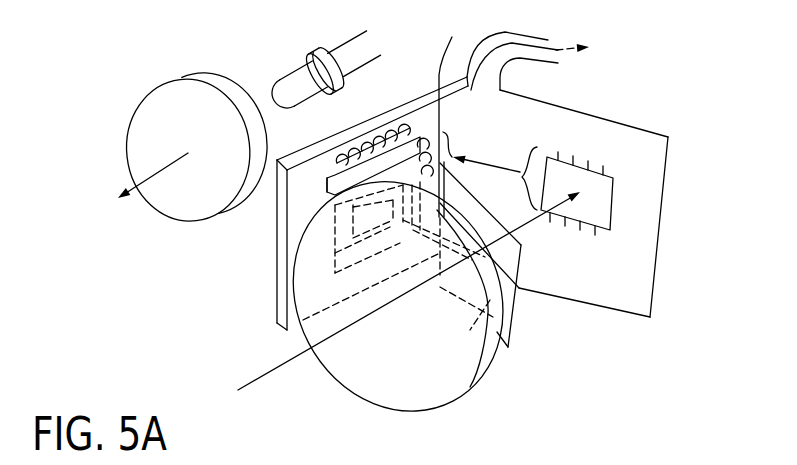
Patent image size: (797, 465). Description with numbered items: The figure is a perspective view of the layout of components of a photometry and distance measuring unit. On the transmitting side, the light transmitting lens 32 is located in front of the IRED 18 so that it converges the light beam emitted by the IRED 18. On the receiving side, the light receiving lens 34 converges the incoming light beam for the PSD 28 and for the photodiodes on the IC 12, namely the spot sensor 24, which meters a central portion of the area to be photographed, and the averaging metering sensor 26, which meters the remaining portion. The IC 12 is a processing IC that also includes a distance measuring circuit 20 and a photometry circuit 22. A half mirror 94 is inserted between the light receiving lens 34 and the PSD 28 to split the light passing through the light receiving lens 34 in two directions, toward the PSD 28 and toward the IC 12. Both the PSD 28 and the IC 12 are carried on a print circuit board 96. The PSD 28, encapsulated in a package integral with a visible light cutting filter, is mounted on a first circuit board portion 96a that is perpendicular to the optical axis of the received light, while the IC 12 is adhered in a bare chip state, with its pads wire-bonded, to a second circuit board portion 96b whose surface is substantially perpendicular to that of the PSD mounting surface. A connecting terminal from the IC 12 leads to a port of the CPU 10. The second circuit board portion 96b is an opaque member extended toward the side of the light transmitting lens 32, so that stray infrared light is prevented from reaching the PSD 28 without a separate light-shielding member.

The CPU 10 is at (637, 47).
The IC 12 is at (432, 190).
The IRED 18 is at (292, 73).
The distance measuring circuit 20 is at (466, 171).
The photometry circuit 22 is at (405, 148).
The spot sensor 24 is at (372, 226).
The averaging metering sensor 26 is at (343, 247).
The PSD 28 is at (618, 178).
The light transmitting lens 32 is at (183, 211).
The light receiving lens 34 is at (468, 394).
The half mirror 94 is at (513, 313).
The print circuit board 96 is at (672, 227).
The first circuit board portion 96a is at (660, 283).
The second circuit board portion 96b is at (277, 252).